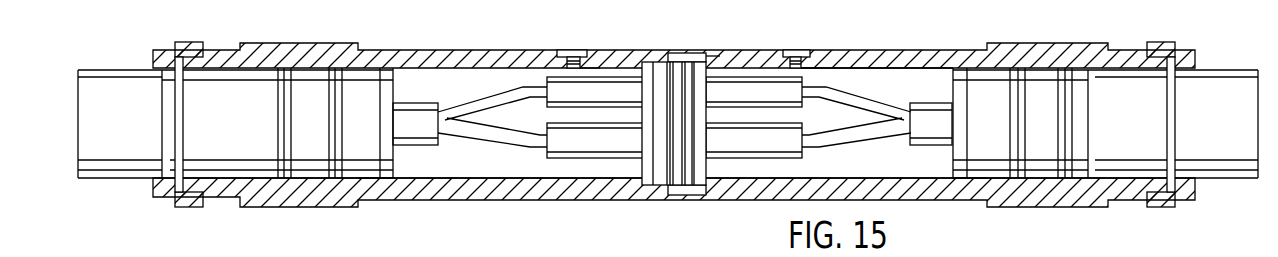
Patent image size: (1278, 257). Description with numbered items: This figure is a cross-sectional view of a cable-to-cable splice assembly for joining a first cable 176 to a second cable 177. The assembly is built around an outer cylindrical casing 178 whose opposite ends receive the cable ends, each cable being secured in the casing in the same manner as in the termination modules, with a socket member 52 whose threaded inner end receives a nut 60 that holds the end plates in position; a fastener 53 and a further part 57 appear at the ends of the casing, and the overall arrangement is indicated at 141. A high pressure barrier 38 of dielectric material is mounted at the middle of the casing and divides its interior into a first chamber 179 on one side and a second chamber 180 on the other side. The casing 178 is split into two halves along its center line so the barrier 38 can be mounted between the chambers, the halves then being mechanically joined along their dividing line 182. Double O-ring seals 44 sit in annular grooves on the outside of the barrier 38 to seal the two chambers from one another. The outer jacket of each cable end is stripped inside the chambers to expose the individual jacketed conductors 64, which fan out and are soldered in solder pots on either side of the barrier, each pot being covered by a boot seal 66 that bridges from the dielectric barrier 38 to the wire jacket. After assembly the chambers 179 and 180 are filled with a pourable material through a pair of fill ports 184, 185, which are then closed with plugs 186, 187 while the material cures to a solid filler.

The high pressure barrier 38 is at (698, 176).
The double O-ring seals 44 is at (682, 182).
The socket member 52 is at (233, 90).
The bolt 53 is at (192, 41).
The lower member 57 is at (222, 253).
The nut 60 is at (375, 163).
The conductors 64 is at (515, 137).
The boot seal 66 is at (587, 145).
The connector assembly 141 is at (497, 0).
The first cable 176 is at (132, 76).
The second cable 177 is at (1233, 78).
The outer cylindrical casing 178 is at (453, 56).
The first chamber 179 is at (527, 167).
The second chamber 180 is at (913, 92).
The dividing line 182 is at (700, 51).
The fill port 184 is at (585, 63).
The fill port 185 is at (802, 65).
The plug 186 is at (578, 49).
The plug 187 is at (797, 50).